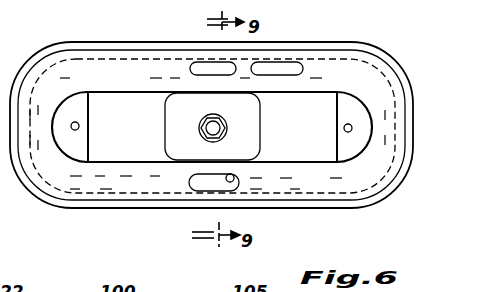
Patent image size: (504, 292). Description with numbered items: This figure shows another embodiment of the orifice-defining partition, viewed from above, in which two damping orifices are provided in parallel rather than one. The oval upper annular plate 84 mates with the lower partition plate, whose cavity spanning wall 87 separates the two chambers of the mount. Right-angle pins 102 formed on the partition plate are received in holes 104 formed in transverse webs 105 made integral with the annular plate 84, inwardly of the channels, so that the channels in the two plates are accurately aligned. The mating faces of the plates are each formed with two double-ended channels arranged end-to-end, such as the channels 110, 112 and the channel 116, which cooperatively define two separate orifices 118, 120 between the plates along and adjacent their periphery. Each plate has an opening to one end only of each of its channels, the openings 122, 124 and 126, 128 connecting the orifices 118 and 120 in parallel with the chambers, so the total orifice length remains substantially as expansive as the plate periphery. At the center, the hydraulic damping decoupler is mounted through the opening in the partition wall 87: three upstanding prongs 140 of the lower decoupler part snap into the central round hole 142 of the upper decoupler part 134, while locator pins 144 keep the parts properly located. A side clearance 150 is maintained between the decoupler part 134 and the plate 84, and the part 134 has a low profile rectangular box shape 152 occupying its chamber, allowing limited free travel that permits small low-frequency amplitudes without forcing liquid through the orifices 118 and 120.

The right-angle pins 102 is at (73, 123).
The side clearance 150 is at (148, 213).
The opening 122 is at (200, 64).
The opening 128 is at (290, 61).
The opening 124 is at (235, 177).
The holes 104 is at (353, 130).
The upstanding prongs 140 is at (227, 123).
The central round hole 142 is at (200, 120).
The locator pins 144 is at (230, 77).
The upper decoupler part 134 is at (148, 151).
The orifice 118 is at (83, 58).
The double-ended channel 110 is at (142, 62).
The double-ended channel 116 is at (370, 67).
The double-ended channel 112 is at (386, 59).
The upper annular plate 84 is at (410, 82).
The transverse webs 105 is at (373, 186).
The cavity spanning wall 87 is at (70, 226).
The opening 126 is at (112, 165).
The rectangular box shape 152 is at (145, 165).
The orifice 120 is at (315, 190).